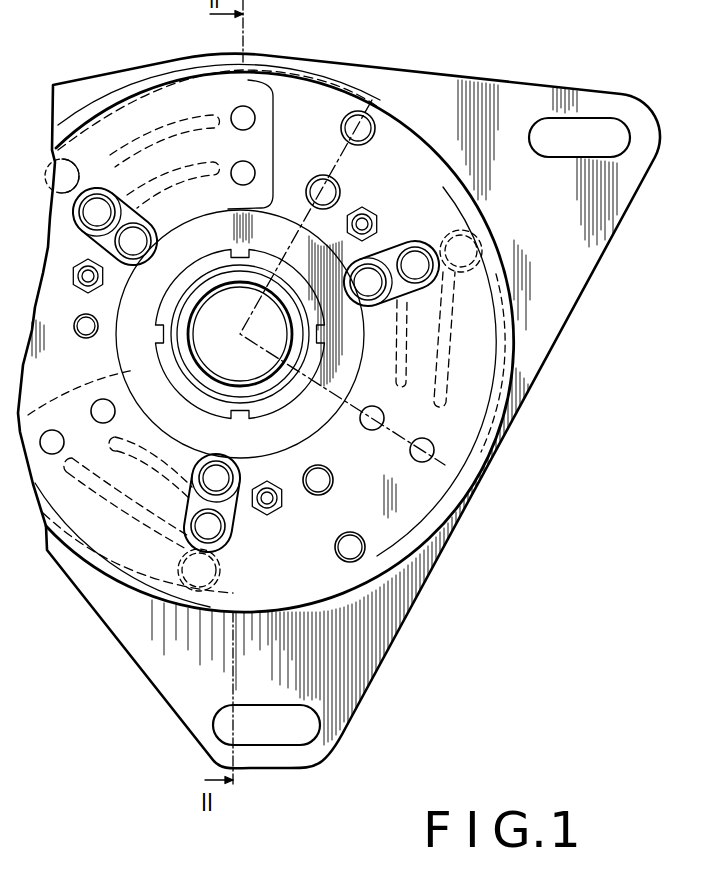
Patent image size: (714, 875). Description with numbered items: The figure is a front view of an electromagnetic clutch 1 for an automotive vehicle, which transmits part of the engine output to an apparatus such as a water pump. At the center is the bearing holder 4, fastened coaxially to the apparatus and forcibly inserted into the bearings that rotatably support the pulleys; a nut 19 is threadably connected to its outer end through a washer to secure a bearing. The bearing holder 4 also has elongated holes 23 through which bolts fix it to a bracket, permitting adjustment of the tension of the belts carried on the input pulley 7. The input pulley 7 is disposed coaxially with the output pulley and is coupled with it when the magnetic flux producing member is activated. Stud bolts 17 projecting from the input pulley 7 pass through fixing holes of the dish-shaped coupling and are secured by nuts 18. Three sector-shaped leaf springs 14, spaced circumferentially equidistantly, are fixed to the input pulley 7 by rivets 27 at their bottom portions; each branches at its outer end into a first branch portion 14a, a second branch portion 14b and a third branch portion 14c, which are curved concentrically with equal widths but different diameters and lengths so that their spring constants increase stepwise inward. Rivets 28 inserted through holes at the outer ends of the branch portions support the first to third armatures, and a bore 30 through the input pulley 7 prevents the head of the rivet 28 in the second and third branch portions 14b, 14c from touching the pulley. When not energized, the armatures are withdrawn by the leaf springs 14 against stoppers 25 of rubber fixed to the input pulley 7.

The electromagnetic clutch 1 is at (298, 51).
The bearing holder 4 is at (508, 428).
The input pulley 7 is at (353, 80).
The leaf spring 14 is at (100, 107).
The first branch portion 14a is at (497, 305).
The second branch portion 14b is at (447, 352).
The third branch portion 14c is at (403, 352).
The stud bolt 17 is at (283, 515).
The nut 18 is at (285, 513).
The nut 19 is at (281, 497).
The elongated hole 23 is at (551, 150).
The stopper 25 is at (340, 184).
The rivet 27 is at (425, 455).
The rivet 28 is at (522, 248).
The bore 30 is at (232, 508).